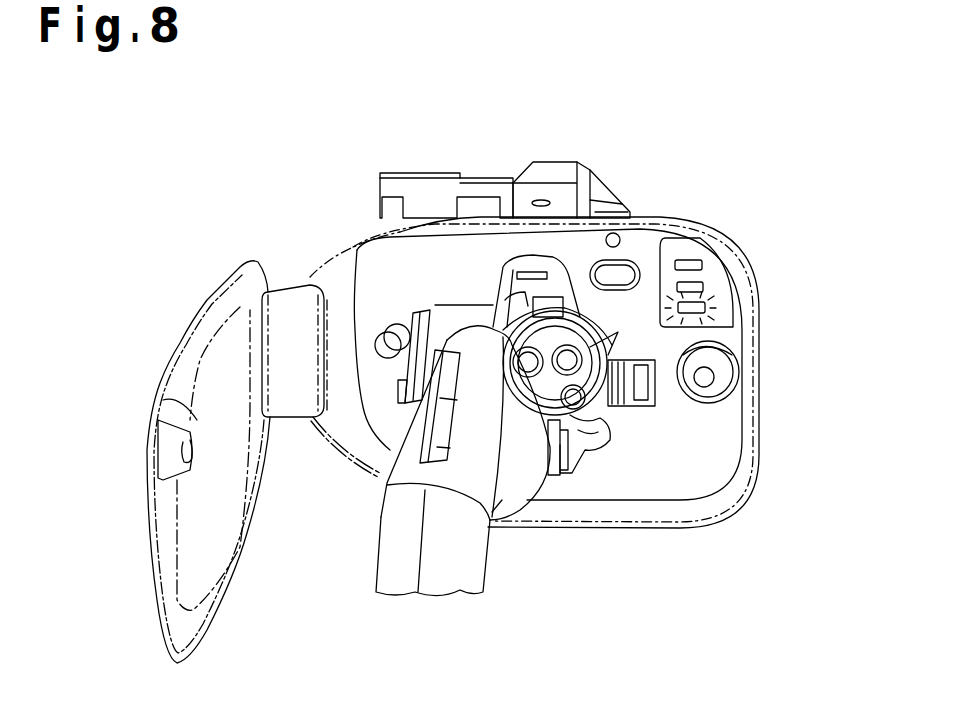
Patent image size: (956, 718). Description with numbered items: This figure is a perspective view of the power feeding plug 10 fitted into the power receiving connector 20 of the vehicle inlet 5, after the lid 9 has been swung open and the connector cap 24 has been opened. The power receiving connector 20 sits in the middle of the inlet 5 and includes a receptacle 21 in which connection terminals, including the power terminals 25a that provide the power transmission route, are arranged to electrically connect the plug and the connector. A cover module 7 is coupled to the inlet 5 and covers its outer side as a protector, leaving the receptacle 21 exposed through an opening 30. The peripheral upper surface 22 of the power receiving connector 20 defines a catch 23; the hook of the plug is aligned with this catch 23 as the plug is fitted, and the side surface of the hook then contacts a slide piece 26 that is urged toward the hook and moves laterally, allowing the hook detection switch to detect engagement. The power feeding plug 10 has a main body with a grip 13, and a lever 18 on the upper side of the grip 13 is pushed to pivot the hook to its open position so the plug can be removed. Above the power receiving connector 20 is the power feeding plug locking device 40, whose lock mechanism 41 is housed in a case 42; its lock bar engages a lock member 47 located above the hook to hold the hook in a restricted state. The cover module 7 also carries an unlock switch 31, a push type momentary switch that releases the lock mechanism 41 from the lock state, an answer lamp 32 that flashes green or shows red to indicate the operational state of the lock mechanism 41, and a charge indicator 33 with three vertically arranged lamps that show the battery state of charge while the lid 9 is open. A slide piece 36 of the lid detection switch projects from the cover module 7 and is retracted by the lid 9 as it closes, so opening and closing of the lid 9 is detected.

The inlet 5 is at (768, 176).
The cover module 7 is at (754, 312).
The lid 9 is at (145, 510).
The power feeding plug 10 is at (417, 308).
The grip 13 is at (376, 545).
The lever 18 is at (452, 416).
The power receiving connector 20 is at (655, 458).
The receptacle 21 is at (610, 412).
The peripheral upper surface 22 is at (585, 326).
The catch 23 is at (505, 290).
The connector cap 24 is at (407, 377).
The power terminals 25a is at (620, 336).
The slide piece 26 is at (507, 272).
The opening 30 is at (592, 456).
The unlock switch 31 is at (625, 268).
The answer lamp 32 is at (606, 242).
The charge indicator 33 is at (715, 258).
The slide piece 36 is at (388, 340).
The power feeding plug locking device 40 is at (569, 150).
The lock mechanism 41 is at (488, 173).
The case 42 is at (432, 172).
The lock member 47 is at (530, 258).